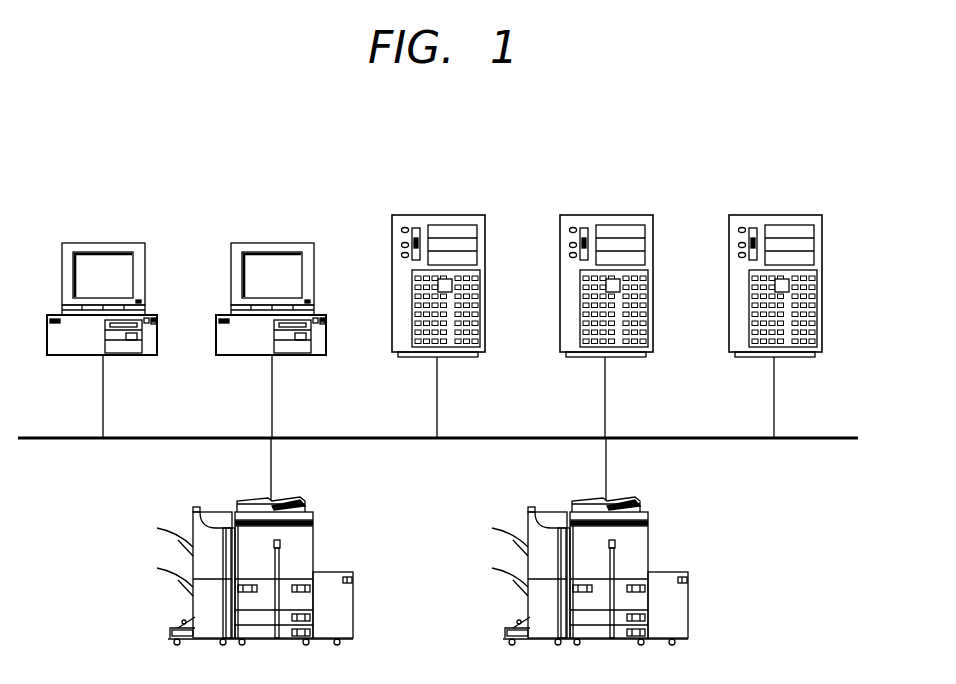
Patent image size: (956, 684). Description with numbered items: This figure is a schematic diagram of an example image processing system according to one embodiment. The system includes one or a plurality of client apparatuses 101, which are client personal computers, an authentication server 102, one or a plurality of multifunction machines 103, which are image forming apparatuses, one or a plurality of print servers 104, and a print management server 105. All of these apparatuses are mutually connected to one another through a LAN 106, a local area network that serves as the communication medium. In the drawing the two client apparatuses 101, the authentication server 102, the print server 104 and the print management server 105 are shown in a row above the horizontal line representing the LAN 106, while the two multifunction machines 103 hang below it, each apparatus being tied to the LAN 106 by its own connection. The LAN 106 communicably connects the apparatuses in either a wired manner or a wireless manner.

The client apparatus 101 is at (123, 242).
The authentication server 102 is at (449, 215).
The multifunction machine 103 is at (303, 497).
The print server 104 is at (617, 215).
The print management server 105 is at (788, 215).
The LAN 106 is at (822, 437).